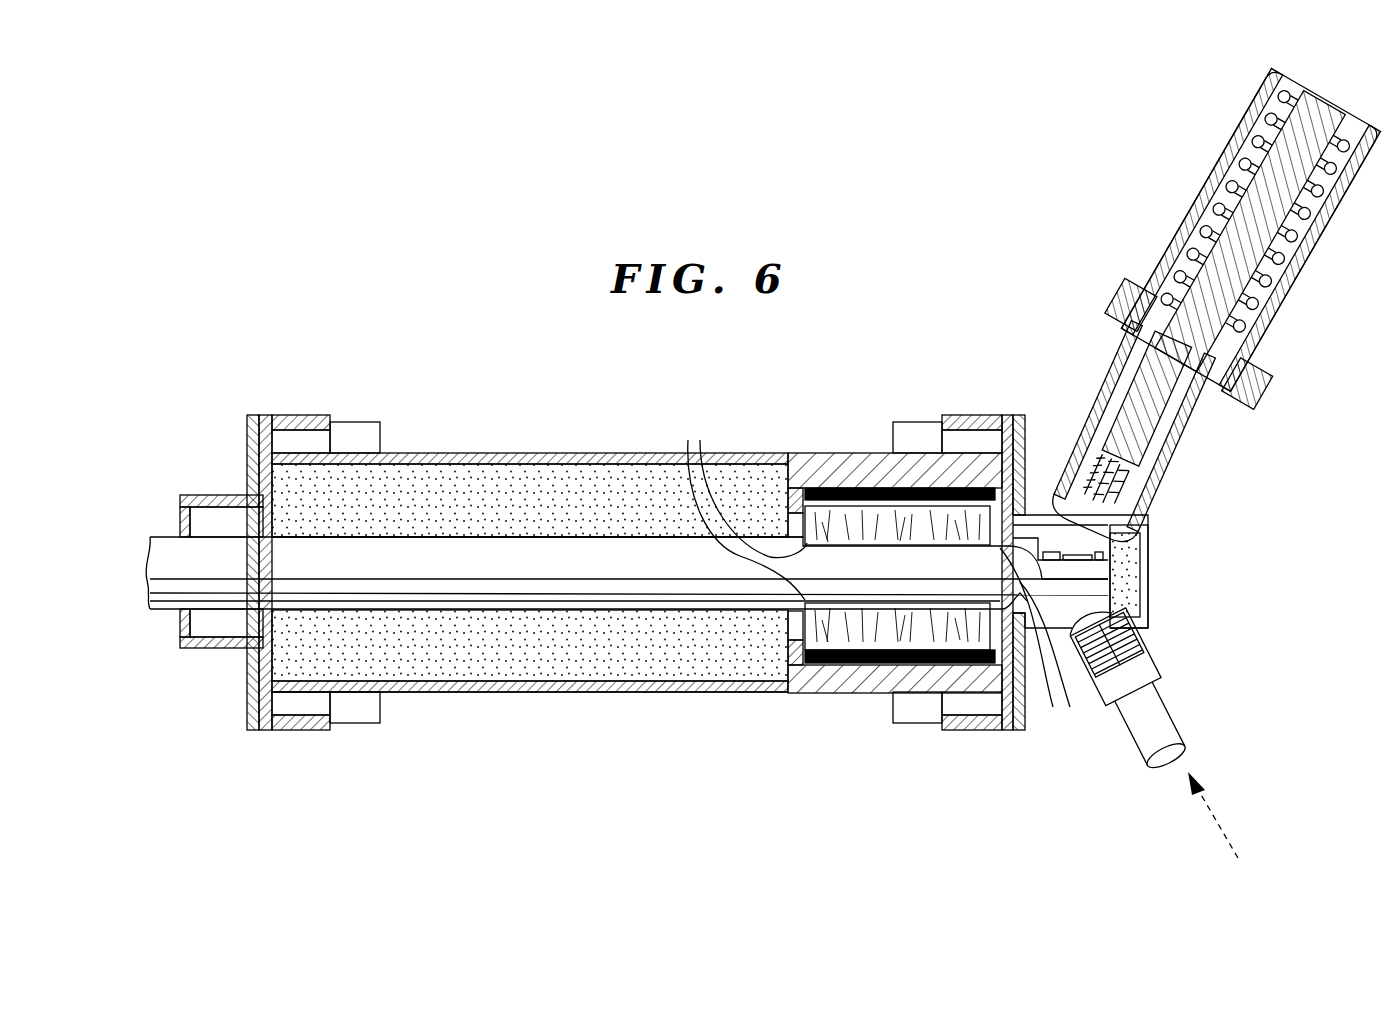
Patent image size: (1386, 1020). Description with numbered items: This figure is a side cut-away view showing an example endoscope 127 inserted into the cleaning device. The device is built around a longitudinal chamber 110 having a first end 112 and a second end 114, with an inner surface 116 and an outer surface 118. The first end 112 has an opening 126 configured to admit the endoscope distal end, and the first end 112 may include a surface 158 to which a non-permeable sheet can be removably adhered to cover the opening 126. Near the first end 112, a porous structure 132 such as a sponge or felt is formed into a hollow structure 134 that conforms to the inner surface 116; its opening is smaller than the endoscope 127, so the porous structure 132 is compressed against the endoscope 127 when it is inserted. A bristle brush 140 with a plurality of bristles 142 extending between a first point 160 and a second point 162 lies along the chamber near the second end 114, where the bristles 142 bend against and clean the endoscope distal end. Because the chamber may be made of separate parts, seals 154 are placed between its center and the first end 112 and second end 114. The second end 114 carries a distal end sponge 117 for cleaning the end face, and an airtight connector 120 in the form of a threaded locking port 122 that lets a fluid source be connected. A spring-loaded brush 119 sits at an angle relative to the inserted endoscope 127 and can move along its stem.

The longitudinal chamber 110 is at (556, 455).
The first end 112 is at (205, 468).
The second end 114 is at (1158, 568).
The inner surface 116 is at (540, 663).
The distal end sponge 117 is at (1148, 535).
The outer surface 118 is at (478, 695).
The spring-loaded brush 119 is at (1112, 450).
The airtight connector 120 is at (1165, 700).
The threaded locking port 122 is at (1145, 649).
The opening 126 is at (172, 614).
The endoscope 127 is at (150, 570).
The porous structure 132 is at (440, 500).
The hollow structure 134 is at (614, 515).
The bristle brush 140 is at (808, 498).
The bristles 142 is at (880, 520).
The seals 154 is at (272, 442).
The surface 158 is at (200, 642).
The first point 160 is at (735, 502).
The second point 162 is at (1046, 647).